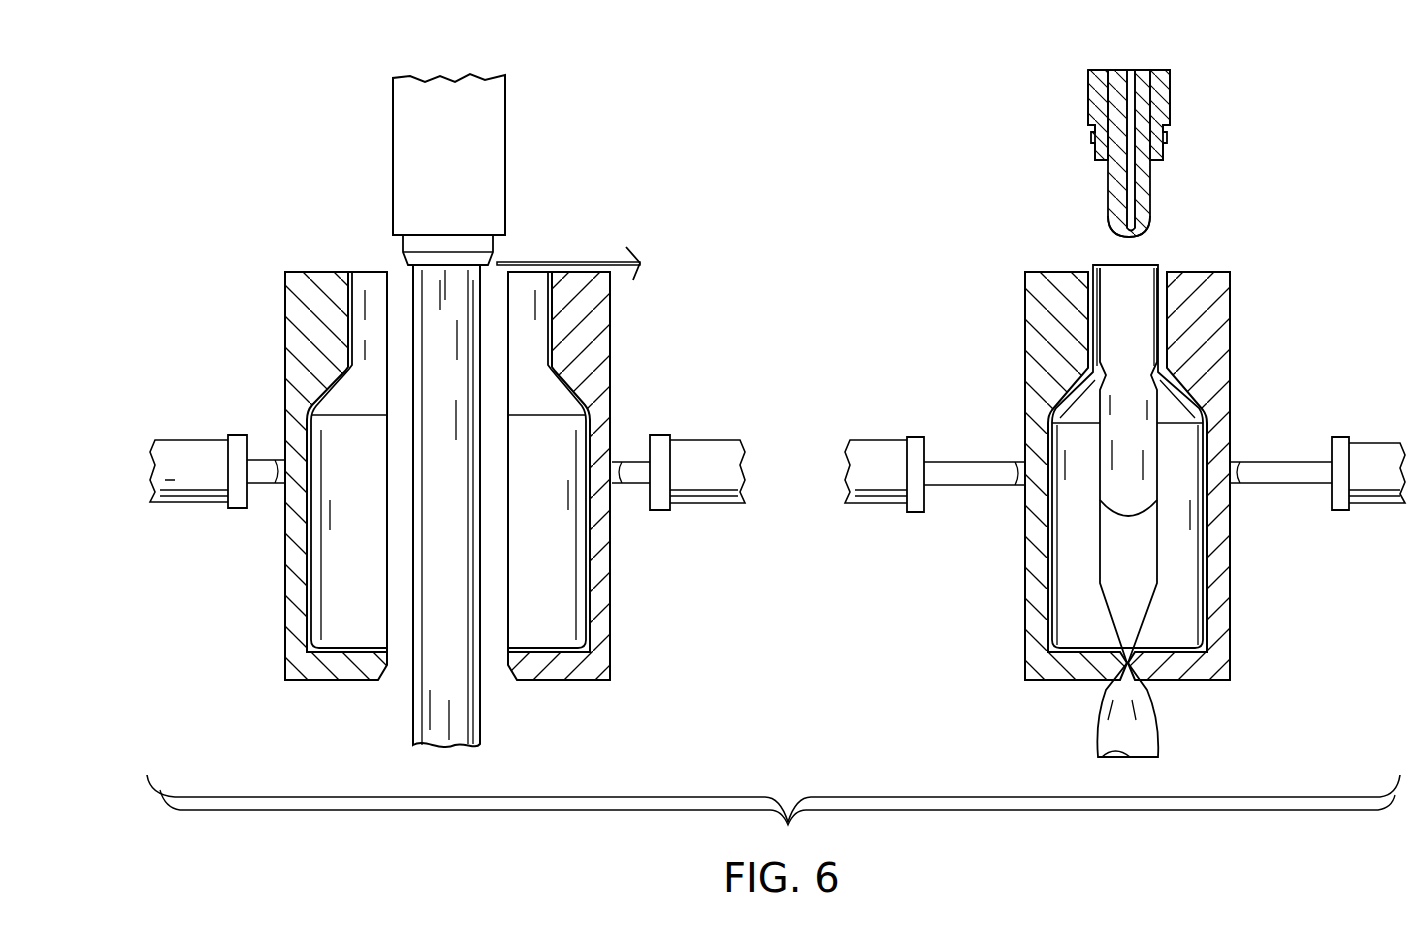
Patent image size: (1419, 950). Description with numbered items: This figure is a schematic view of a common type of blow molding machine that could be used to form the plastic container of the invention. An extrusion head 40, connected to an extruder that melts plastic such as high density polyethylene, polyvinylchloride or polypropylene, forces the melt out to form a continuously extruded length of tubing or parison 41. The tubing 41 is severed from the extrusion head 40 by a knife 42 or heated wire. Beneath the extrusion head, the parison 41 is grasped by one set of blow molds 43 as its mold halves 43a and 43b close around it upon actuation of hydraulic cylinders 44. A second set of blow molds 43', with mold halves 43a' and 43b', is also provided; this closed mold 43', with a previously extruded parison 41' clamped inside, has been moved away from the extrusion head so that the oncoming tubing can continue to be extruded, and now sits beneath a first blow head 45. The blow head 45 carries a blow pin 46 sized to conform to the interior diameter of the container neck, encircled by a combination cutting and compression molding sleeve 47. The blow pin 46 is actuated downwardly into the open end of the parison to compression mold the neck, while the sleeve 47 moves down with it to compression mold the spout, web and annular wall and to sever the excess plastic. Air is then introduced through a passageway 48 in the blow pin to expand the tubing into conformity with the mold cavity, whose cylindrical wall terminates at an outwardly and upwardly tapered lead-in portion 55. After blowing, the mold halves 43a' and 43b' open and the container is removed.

The extrusion head 40 is at (510, 154).
The parison 41 is at (409, 514).
The previously extruded parison 41' is at (1048, 512).
The knife 42 is at (560, 262).
The blow mold 43 is at (394, 462).
The mold half 43a is at (295, 476).
The mold half 43b is at (615, 476).
The second set of blow molds 43' is at (1075, 448).
The mold half 43a' is at (1023, 476).
The mold half 43b' is at (1239, 476).
The hydraulic cylinder 44 is at (195, 490).
The blow head 45 is at (1186, 105).
The blow pin 46 is at (1142, 200).
The cutting and compression molding sleeve 47 is at (1090, 100).
The passageway 48 is at (1131, 82).
The lead-in portion 55 is at (1164, 272).